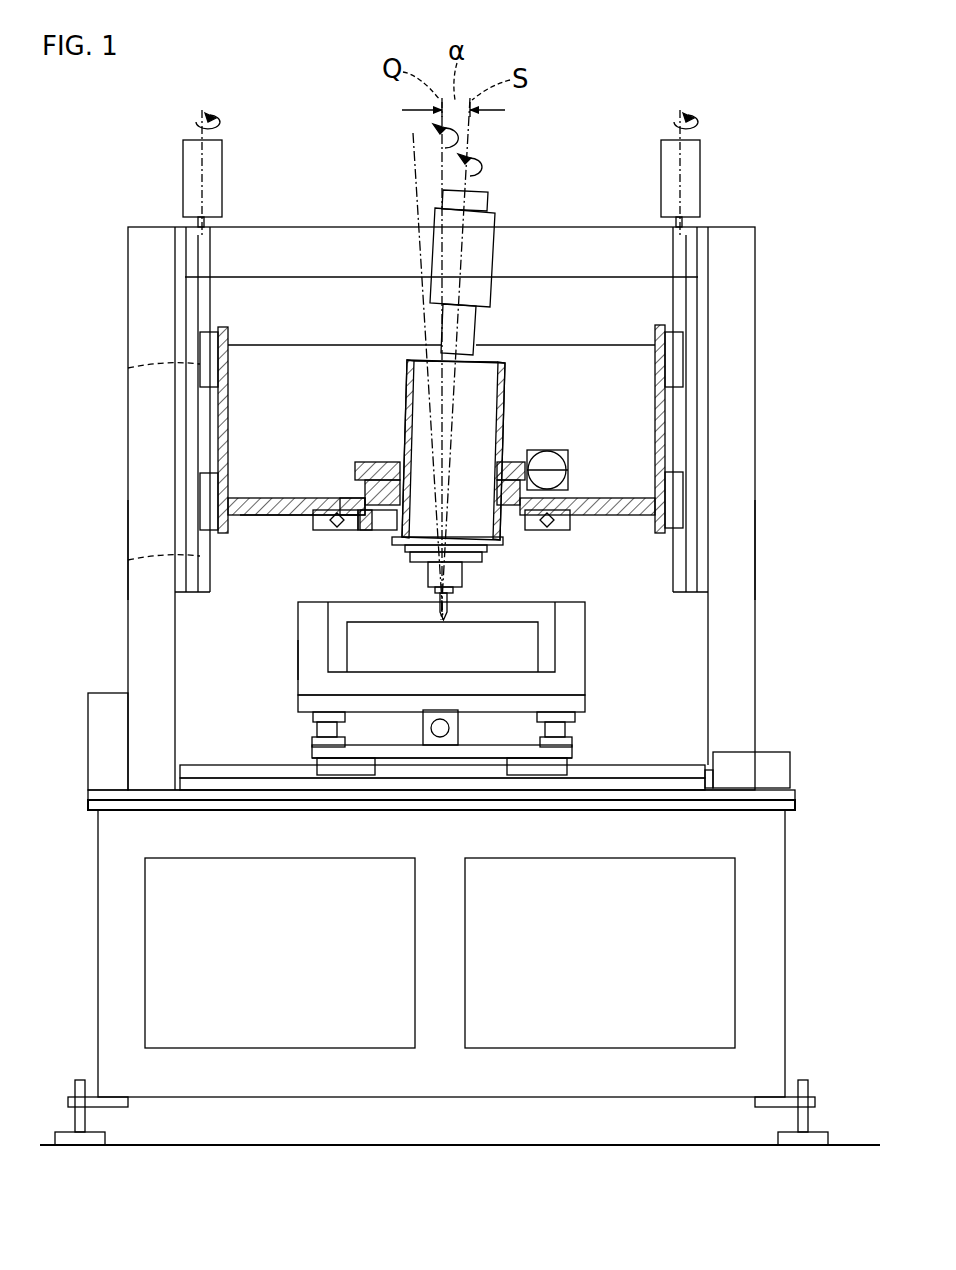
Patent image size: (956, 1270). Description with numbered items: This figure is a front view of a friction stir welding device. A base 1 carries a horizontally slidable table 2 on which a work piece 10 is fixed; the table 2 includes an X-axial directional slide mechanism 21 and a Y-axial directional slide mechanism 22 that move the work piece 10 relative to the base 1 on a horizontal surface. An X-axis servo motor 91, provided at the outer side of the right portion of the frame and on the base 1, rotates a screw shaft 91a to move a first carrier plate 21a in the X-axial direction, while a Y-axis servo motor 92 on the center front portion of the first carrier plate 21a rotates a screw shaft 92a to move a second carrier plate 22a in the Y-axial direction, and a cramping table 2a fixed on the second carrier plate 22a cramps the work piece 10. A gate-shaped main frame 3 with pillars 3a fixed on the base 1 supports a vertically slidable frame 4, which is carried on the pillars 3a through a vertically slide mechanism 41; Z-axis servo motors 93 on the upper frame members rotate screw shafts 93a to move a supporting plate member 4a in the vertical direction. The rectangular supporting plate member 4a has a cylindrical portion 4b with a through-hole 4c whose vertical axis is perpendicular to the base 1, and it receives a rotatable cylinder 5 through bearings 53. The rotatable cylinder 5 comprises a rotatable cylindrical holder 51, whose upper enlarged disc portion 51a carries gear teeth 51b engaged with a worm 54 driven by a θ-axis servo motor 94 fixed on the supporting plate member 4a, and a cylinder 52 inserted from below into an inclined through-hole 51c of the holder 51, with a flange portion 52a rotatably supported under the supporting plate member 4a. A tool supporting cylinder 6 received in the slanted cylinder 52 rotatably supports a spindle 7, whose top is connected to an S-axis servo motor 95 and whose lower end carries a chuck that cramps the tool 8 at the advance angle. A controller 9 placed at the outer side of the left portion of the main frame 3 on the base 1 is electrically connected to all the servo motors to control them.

The base 1 is at (795, 855).
The horizontally slidable table 2 is at (427, 648).
The cramping table 2a is at (297, 655).
The main frame 3 is at (122, 476).
The pillars 3a is at (130, 555).
The vertically slidable frame 4 is at (621, 520).
The supporting plate member 4a is at (300, 518).
The cylindrical portion 4b is at (372, 492).
The through-hole 4c is at (370, 527).
The rotatable cylinder 5 is at (442, 446).
The tool supporting cylinder 6 is at (418, 395).
The spindle 7 is at (465, 577).
The tool 8 is at (438, 608).
The controller 9 is at (105, 700).
The work piece 10 is at (355, 632).
The X-axial directional slide mechanism 21 is at (562, 770).
The first carrier plate 21a is at (400, 760).
The Y-axial directional slide mechanism 22 is at (320, 728).
The second carrier plate 22a is at (297, 710).
The vertically slide mechanism 41 is at (208, 358).
The rotatable cylindrical holder 51 is at (457, 450).
The enlarged disc portion 51a is at (370, 465).
The gear teeth 51b is at (368, 484).
The through-hole 51c is at (494, 420).
The cylinder 52 is at (405, 365).
The flange portion 52a is at (515, 535).
The bearings 53 is at (506, 392).
The worm 54 is at (530, 455).
The X-axis servo motor 91 is at (775, 760).
The screw shaft 91a is at (708, 770).
The Y-axis servo motor 92 is at (430, 715).
The screw shaft 92a is at (452, 728).
The Z-axis servo motors 93 is at (192, 167).
The screw shafts 93a is at (197, 222).
The θ-axis servo motor 94 is at (568, 486).
The S-axis servo motor 95 is at (490, 215).